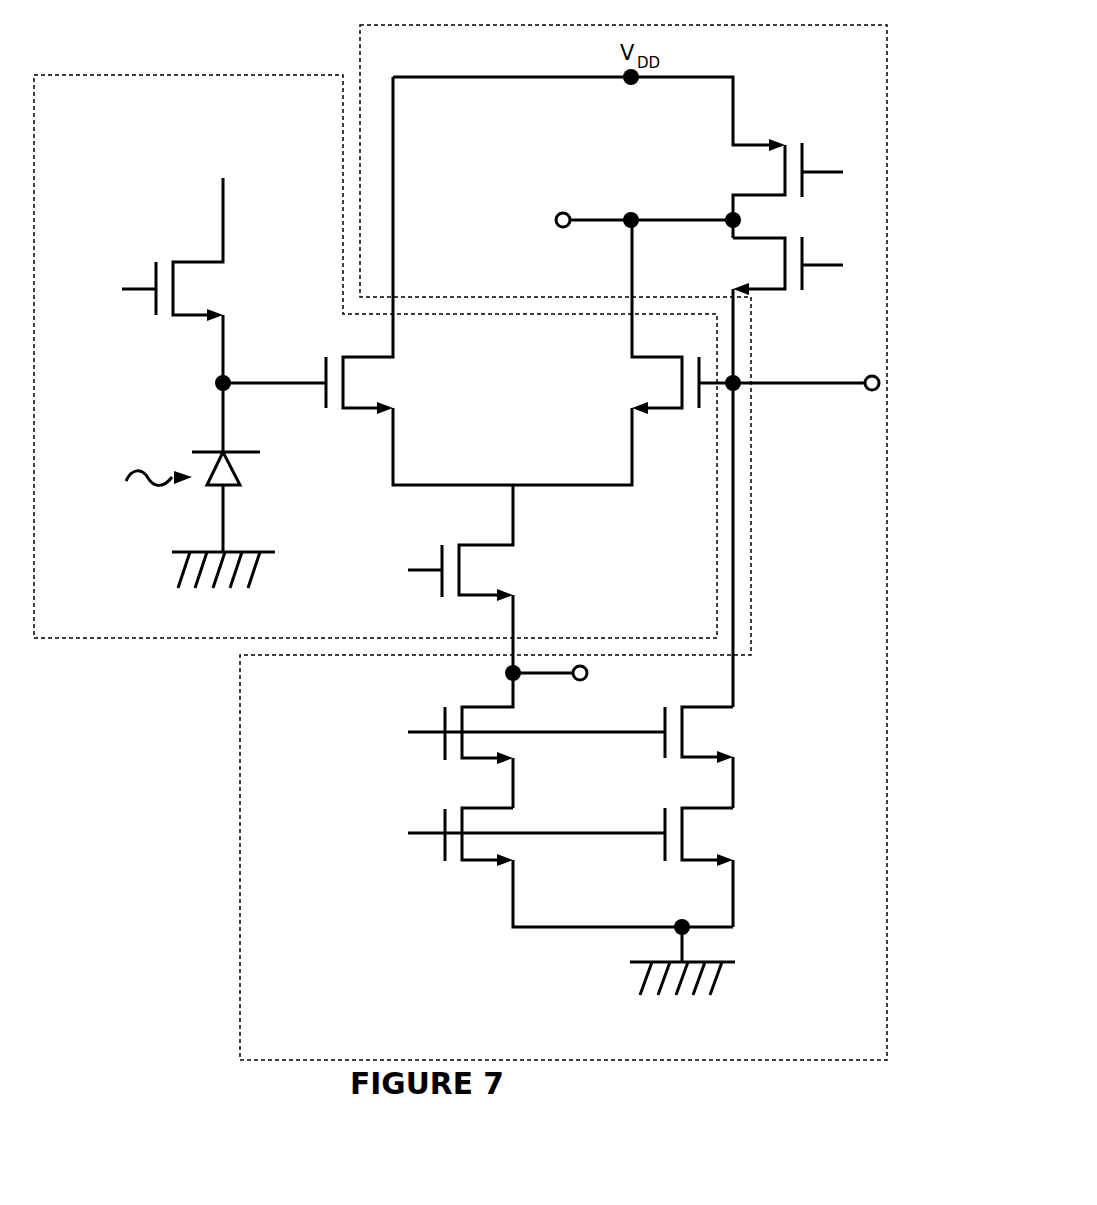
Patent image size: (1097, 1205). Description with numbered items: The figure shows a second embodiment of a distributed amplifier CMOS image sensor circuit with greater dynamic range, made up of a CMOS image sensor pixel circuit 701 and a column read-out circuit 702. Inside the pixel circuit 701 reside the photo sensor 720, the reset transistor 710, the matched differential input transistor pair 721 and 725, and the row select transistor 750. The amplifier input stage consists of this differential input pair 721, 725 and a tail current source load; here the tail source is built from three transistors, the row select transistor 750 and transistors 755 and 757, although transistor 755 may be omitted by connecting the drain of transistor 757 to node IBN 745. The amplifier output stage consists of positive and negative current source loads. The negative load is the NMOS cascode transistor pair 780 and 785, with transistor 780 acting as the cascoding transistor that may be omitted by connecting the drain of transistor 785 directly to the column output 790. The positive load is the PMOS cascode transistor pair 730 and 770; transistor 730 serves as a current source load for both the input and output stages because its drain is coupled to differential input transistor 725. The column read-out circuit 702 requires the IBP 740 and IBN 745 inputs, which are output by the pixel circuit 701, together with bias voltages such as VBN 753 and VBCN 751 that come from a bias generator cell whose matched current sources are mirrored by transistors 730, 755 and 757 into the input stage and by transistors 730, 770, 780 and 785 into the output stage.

The CMOS image sensor pixel circuit 701 is at (375, 356).
The column read-out circuit 702 is at (563, 542).
The reset transistor 710 is at (155, 239).
The photo sensor 720 is at (217, 517).
The differential input transistor 721 is at (419, 281).
The differential input transistor 725 is at (623, 352).
The PMOS cascode transistor 730 is at (808, 188).
The IBP input signal node 740 is at (625, 223).
The IBN input signal node 745 is at (590, 677).
The row select transistor 750 is at (451, 579).
The VBCN input signal 751 is at (507, 735).
The VBN input signal 753 is at (510, 835).
The tail current source transistor 755 is at (506, 740).
The tail current source transistor 757 is at (589, 867).
The PMOS cascode transistor 770 is at (806, 472).
The NMOS cascoding transistor 780 is at (726, 757).
The NMOS cascode transistor 785 is at (726, 867).
The column output 790 is at (806, 379).